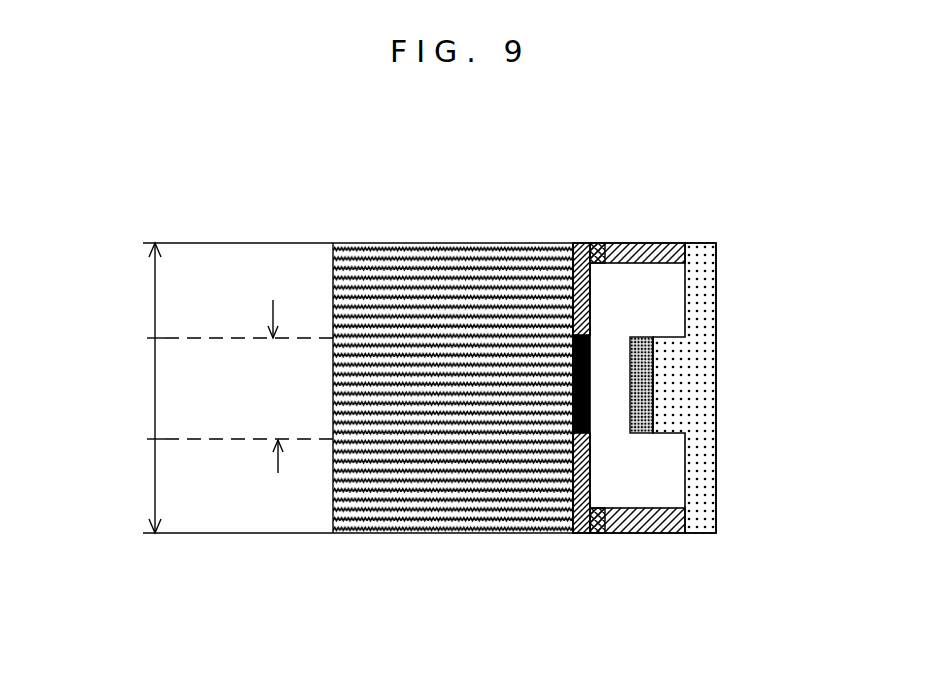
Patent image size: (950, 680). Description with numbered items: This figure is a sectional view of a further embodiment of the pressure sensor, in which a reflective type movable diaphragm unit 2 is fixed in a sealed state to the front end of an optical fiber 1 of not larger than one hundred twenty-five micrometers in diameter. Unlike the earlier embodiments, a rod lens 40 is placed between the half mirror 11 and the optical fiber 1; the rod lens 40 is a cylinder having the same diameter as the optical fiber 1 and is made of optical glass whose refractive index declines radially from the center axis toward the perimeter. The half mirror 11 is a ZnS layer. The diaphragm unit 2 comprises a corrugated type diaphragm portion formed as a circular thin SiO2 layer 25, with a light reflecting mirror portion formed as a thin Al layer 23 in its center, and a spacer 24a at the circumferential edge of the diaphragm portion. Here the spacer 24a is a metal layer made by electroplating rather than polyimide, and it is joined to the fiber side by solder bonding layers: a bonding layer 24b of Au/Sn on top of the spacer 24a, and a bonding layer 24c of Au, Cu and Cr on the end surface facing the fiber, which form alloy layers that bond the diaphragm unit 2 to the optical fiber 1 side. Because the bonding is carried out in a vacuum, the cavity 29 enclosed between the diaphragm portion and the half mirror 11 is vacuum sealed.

The optical fiber 1 is at (202, 253).
The rod lens 40 is at (407, 260).
The spacer 24a is at (642, 241).
The bonding layer 24b is at (593, 241).
The bonding layer 24c is at (577, 241).
The SiO2 layer (corrugated type diaphragm portion) 25 is at (703, 325).
The Al layer (light reflecting mirror portion) 23 is at (653, 363).
The reflective type movable diaphragm unit 2 is at (716, 395).
The ZnS layer (half mirror layer) 11 is at (592, 400).
The cavity 29 is at (600, 450).